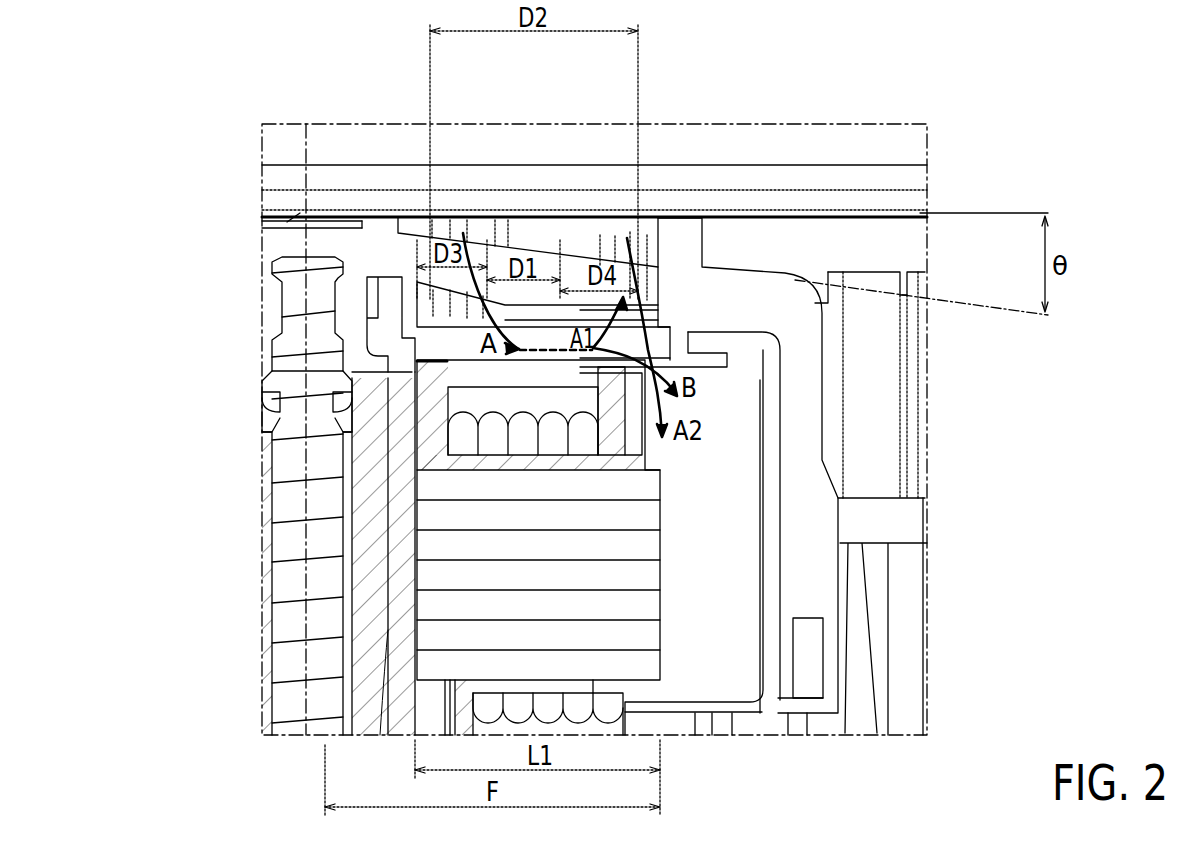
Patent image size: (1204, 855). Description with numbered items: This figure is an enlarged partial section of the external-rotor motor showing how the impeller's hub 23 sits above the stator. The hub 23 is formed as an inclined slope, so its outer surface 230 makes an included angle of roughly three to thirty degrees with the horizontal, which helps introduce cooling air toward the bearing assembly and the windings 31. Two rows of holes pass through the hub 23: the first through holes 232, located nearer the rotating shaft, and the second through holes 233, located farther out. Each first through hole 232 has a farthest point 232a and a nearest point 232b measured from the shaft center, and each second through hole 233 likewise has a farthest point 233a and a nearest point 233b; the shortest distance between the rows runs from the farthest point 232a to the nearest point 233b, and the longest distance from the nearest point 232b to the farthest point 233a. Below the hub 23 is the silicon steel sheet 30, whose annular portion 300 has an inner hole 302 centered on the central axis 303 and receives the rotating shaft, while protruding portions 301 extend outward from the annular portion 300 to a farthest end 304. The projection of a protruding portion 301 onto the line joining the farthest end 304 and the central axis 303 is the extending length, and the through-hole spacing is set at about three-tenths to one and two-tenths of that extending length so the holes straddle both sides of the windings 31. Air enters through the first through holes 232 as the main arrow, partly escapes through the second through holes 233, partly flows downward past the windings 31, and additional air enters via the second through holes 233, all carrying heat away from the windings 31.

The hub 23 is at (720, 267).
The outer surface 230 is at (708, 267).
The first through holes 232 is at (477, 253).
The farthest point 232a is at (497, 240).
The nearest point 232b is at (427, 250).
The second through holes 233 is at (598, 262).
The farthest point 233a is at (648, 267).
The nearest point 233b is at (563, 240).
The silicon steel sheet 30 is at (600, 578).
The annular portion 300 is at (404, 390).
The protruding portions 301 is at (613, 422).
The inner hole 302 is at (332, 392).
The central axis 303 is at (320, 150).
The farthest end 304 is at (647, 463).
The windings 31 is at (582, 708).